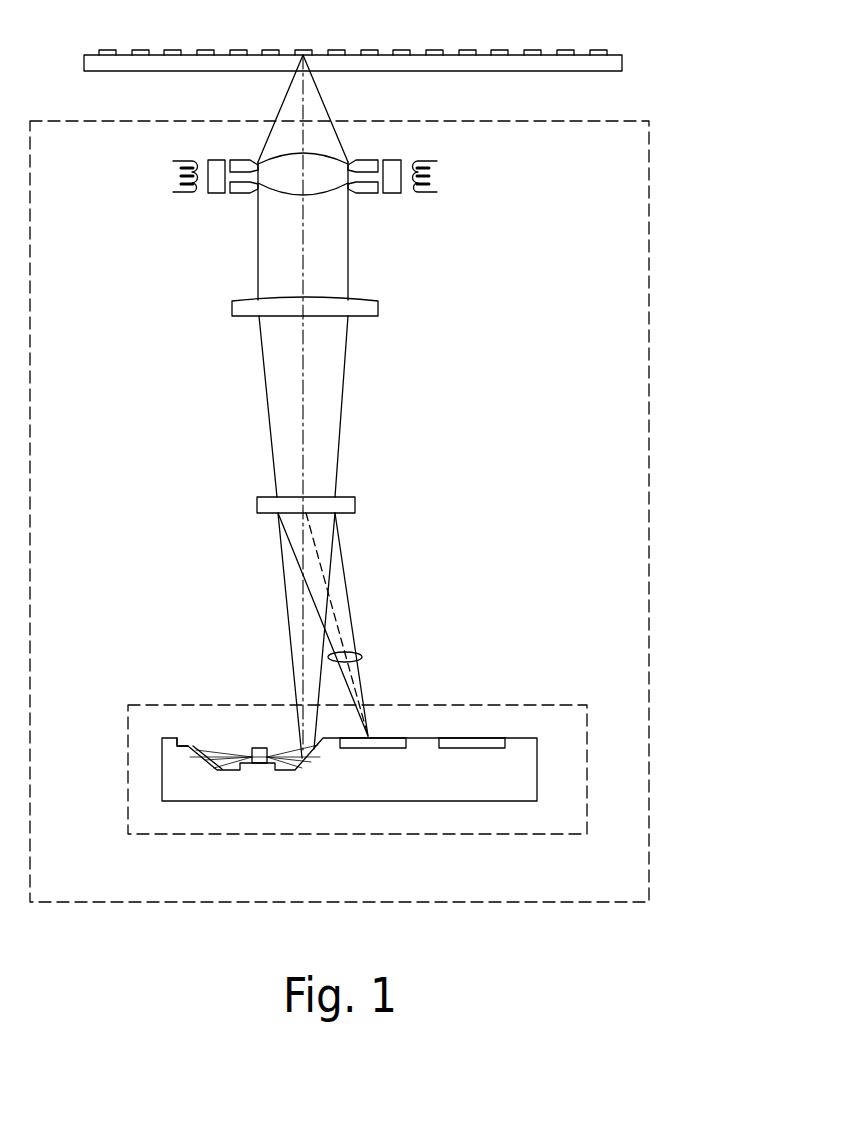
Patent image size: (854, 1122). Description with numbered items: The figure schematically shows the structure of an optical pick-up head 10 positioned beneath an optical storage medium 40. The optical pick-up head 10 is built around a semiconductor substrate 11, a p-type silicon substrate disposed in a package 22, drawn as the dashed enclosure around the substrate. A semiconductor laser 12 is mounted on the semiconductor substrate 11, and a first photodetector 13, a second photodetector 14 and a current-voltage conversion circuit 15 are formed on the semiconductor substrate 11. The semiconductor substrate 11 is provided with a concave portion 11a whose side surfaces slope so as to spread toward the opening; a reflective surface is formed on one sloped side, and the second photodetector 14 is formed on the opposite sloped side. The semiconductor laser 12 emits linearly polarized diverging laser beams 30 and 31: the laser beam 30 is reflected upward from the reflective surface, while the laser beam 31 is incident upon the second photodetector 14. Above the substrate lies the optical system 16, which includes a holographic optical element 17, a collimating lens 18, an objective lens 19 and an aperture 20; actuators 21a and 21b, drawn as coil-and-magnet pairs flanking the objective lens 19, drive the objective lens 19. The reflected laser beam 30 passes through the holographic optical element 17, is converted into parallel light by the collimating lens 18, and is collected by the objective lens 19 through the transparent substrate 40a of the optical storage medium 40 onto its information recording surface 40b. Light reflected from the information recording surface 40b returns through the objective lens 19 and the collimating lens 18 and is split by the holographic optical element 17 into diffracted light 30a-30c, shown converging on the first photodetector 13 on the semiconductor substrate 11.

The optical pick-up head 10 is at (649, 630).
The semiconductor substrate 11 is at (452, 803).
The concave portion 11a is at (228, 737).
The semiconductor laser 12 is at (258, 748).
The first photodetector 13 is at (386, 737).
The second photodetector 14 is at (185, 740).
The current-voltage conversion circuit 15 is at (470, 737).
The optical system 16 is at (377, 333).
The holographic optical element 17 is at (350, 495).
The collimating lens 18 is at (378, 306).
The objective lens 19 is at (327, 190).
The aperture 20 is at (363, 195).
The actuator 21a is at (176, 174).
The actuator 21b is at (425, 178).
The package 22 is at (568, 702).
The laser beam 30 is at (287, 748).
The diffracted light 30a-30c is at (365, 655).
The laser beam 31 is at (231, 748).
The optical storage medium 40 is at (420, 48).
The transparent substrate 40a is at (622, 63).
The information recording surface 40b is at (606, 50).